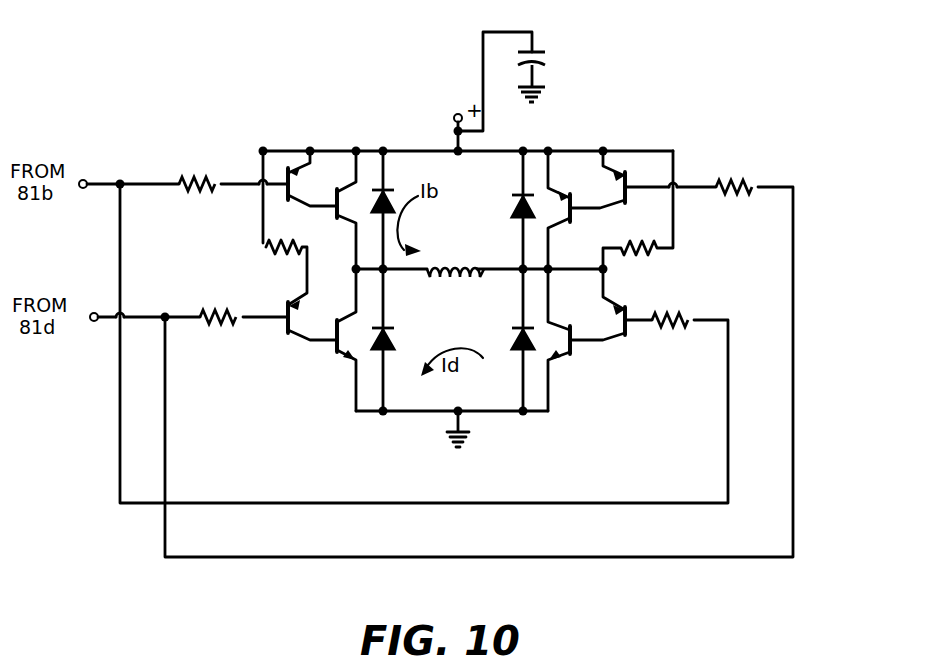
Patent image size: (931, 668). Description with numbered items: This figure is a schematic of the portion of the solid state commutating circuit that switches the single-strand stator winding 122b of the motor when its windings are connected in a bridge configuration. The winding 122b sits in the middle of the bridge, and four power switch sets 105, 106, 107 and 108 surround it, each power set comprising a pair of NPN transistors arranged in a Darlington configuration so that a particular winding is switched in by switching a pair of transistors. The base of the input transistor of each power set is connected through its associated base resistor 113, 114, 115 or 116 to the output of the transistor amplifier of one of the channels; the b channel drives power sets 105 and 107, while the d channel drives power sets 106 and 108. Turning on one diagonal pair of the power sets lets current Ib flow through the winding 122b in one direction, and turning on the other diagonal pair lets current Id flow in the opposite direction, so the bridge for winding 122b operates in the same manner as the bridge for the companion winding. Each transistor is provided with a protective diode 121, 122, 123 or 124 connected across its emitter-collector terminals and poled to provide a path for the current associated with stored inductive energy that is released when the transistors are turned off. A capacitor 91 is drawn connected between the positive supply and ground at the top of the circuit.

The capacitor 91 is at (548, 60).
The power switch set 105 is at (339, 166).
The power switch set 106 is at (612, 110).
The power switch set 107 is at (577, 318).
The power switch set 108 is at (324, 336).
The base resistor 113 is at (230, 147).
The base resistor 114 is at (721, 173).
The base resistor 115 is at (670, 311).
The base resistor 116 is at (222, 280).
The protective diode 121 is at (390, 200).
The protective diode 122 is at (513, 200).
The stator winding 122b is at (437, 256).
The protective diode 123 is at (514, 338).
The protective diode 124 is at (392, 338).